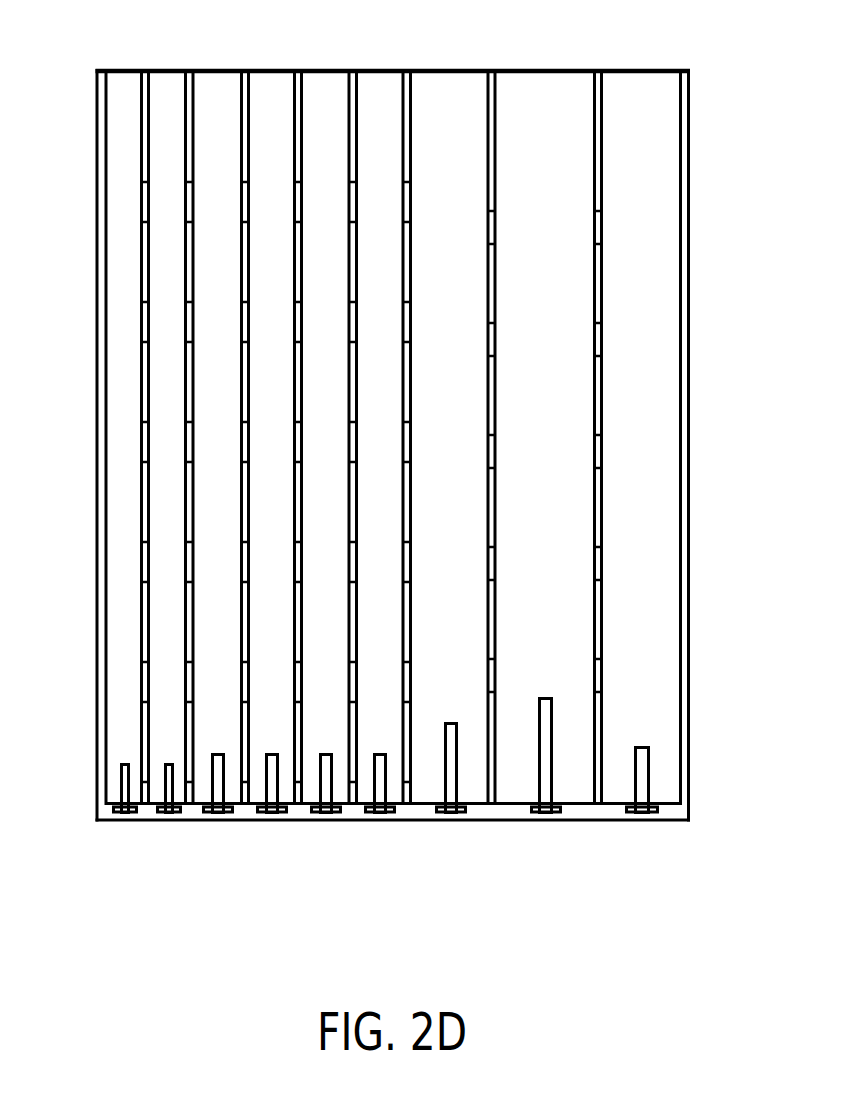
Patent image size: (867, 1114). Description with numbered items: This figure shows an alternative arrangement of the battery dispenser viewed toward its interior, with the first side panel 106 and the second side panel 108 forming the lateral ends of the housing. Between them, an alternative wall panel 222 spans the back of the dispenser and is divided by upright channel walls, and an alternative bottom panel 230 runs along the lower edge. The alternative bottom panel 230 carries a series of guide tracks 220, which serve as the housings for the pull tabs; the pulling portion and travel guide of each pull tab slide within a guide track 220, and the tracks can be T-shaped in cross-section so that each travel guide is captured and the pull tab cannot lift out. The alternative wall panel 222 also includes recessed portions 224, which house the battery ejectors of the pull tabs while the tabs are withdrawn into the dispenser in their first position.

The first side panel 106 is at (690, 378).
The second side panel 108 is at (95, 318).
The guide tracks 220 is at (125, 813).
The alternative wall panel 222 is at (637, 87).
The recessed portions 224 is at (642, 746).
The alternative bottom panel 230 is at (673, 810).